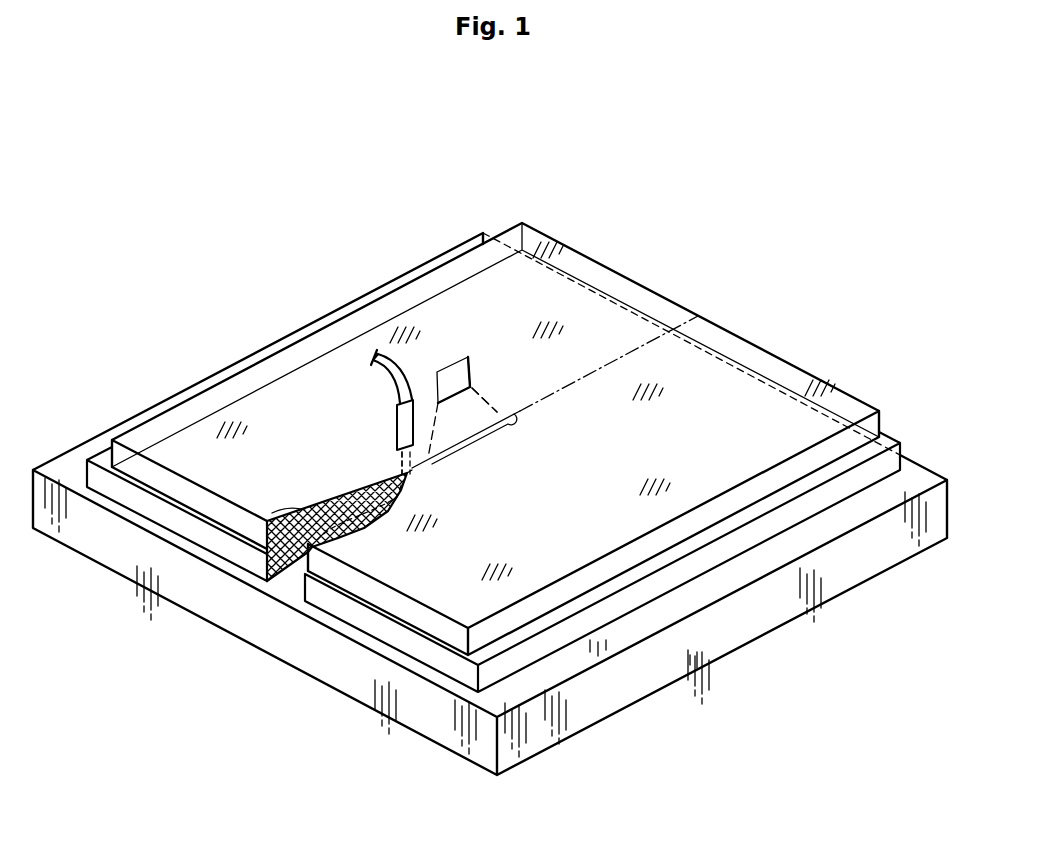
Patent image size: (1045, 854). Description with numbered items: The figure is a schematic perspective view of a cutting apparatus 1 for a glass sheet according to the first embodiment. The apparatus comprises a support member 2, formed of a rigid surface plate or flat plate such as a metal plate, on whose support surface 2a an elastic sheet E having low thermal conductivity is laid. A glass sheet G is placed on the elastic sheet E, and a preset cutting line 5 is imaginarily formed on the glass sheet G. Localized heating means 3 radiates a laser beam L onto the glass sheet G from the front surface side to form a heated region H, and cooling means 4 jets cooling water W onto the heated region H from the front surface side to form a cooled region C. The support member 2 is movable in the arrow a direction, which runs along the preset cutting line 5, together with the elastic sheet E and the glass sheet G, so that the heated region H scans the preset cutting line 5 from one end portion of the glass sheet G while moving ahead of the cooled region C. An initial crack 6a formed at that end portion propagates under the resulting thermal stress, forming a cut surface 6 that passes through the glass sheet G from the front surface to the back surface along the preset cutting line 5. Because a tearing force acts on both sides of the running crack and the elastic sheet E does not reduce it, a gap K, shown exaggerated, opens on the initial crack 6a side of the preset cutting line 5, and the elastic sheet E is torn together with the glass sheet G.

The cutting apparatus 1 is at (676, 196).
The support member 2 is at (342, 680).
The support surface 2a is at (724, 580).
The localized heating means 3 is at (465, 347).
The cooling means 4 is at (387, 391).
The preset cutting line 5 is at (631, 352).
The cut surface 6 is at (328, 500).
The initial crack 6a is at (284, 496).
The glass sheet G is at (572, 289).
The laser beam L is at (493, 410).
The heated region H is at (473, 443).
The cooling water W is at (403, 467).
The cooled region C is at (411, 474).
The gap K is at (286, 583).
The elastic sheet E is at (612, 618).
The arrow direction a is at (563, 753).